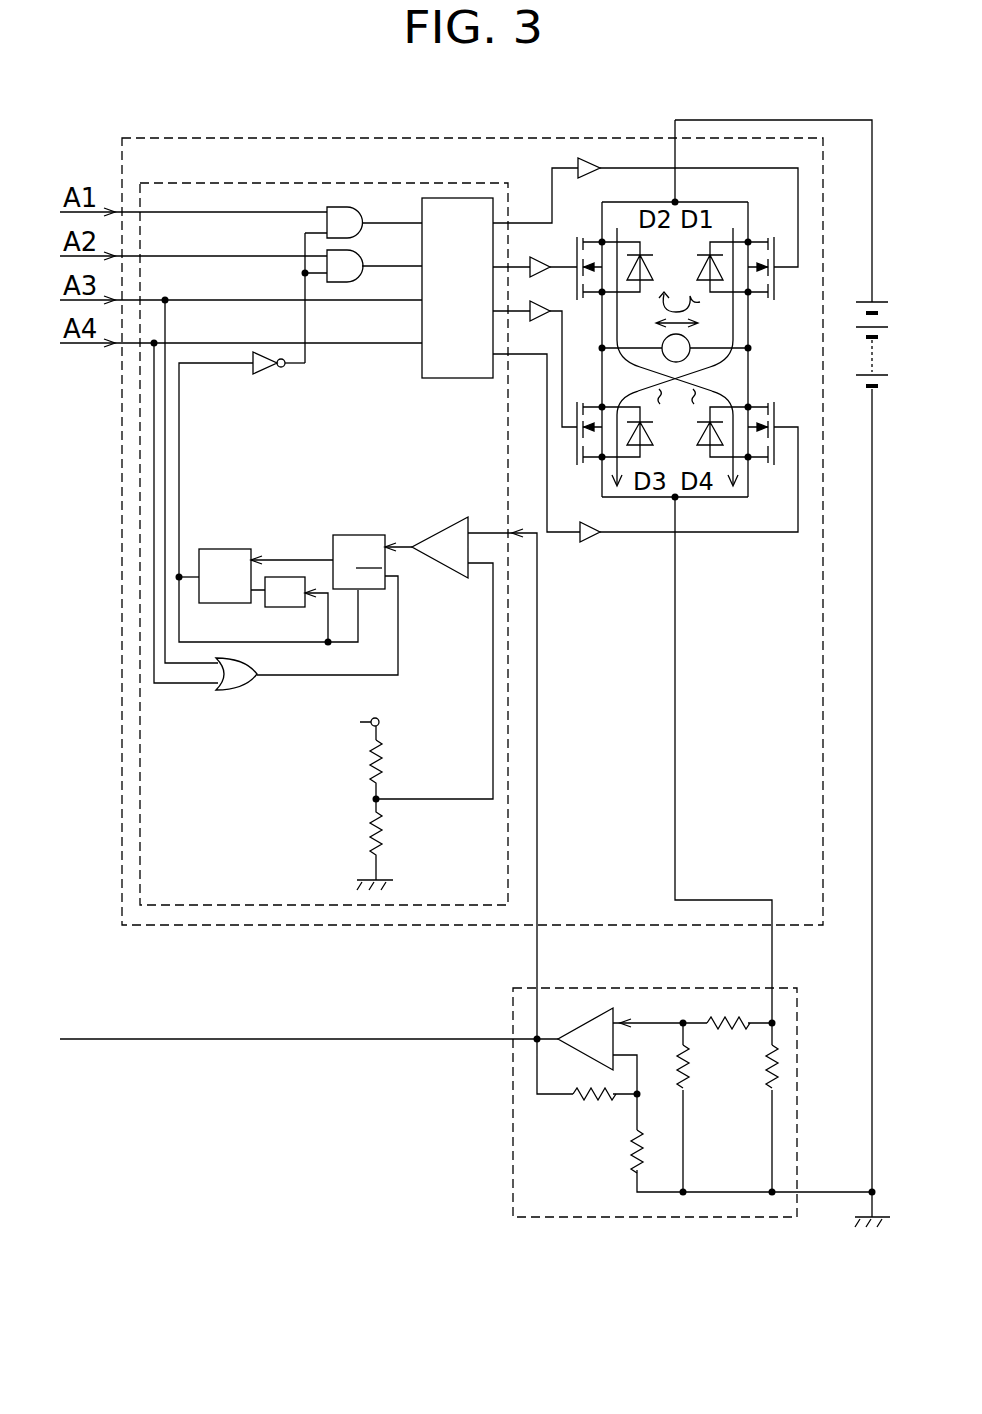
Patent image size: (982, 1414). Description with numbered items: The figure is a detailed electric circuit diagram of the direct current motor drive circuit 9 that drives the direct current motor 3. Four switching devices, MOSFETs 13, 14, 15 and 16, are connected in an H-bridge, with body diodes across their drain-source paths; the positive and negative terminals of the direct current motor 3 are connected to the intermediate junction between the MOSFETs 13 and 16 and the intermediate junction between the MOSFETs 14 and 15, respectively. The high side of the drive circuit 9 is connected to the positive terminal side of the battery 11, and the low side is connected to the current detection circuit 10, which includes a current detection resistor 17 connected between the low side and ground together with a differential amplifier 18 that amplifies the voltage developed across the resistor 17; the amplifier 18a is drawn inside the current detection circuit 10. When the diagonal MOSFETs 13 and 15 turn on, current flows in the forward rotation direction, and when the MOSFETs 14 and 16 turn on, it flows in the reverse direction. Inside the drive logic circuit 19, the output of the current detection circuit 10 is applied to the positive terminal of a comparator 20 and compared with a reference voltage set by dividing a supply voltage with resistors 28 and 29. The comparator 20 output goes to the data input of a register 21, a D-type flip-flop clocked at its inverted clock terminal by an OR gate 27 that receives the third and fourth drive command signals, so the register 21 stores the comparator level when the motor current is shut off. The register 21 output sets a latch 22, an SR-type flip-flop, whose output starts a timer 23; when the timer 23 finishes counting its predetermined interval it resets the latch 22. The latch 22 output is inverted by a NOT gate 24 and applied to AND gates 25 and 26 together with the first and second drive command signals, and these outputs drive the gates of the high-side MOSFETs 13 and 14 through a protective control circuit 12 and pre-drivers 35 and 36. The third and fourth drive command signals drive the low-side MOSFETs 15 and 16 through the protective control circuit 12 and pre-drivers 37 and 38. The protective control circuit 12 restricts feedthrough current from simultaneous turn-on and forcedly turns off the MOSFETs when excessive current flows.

The direct current motor 3 is at (689, 358).
The direct current motor drive circuit 9 is at (329, 139).
The current detection circuit 10 is at (797, 1100).
The power source (battery) 11 is at (869, 300).
The protective control circuit 12 is at (454, 198).
The MOSFET 13 is at (759, 237).
The MOSFET 14 is at (586, 237).
The MOSFET 15 is at (586, 400).
The MOSFET 16 is at (759, 400).
The current detection resistor 17 is at (779, 1067).
The differential amplifier 18 is at (586, 1121).
The operational amplifier 18a is at (538, 963).
The drive logic circuit 19 is at (238, 182).
The comparator 20 is at (448, 578).
The register 21 is at (346, 535).
The latch 22 is at (215, 549).
The timer 23 is at (278, 607).
The NOT gate (inverter) 24 is at (276, 369).
The AND gate 25 is at (363, 212).
The AND gate 26 is at (363, 256).
The OR gate 27 is at (259, 668).
The resistor 28 is at (362, 766).
The resistor 29 is at (362, 818).
The pre-driver 35 is at (601, 164).
The pre-driver 36 is at (544, 265).
The pre-driver 37 is at (548, 313).
The pre-driver 38 is at (590, 541).